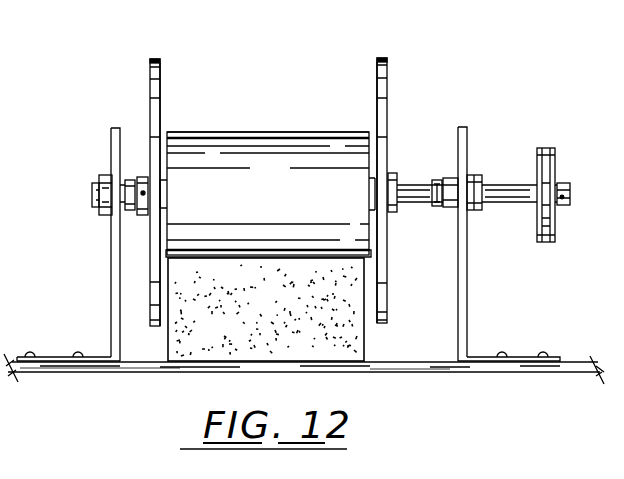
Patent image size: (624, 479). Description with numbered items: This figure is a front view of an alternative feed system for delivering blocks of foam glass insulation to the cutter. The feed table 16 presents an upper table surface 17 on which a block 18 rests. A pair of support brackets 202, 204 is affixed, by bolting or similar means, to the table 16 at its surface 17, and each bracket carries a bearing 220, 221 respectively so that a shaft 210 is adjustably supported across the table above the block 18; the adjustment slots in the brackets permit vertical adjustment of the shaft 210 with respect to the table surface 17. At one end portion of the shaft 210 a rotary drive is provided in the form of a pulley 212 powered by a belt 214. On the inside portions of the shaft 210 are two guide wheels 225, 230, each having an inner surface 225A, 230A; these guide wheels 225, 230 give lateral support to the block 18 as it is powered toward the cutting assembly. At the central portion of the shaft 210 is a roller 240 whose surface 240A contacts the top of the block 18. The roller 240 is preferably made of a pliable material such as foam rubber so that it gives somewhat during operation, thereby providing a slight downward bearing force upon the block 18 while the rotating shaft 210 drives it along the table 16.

The feed table 16 is at (445, 366).
The table surface 17 is at (386, 356).
The block 18 is at (270, 355).
The support bracket 202 is at (467, 296).
The support bracket 204 is at (59, 357).
The shaft 210 is at (412, 200).
The pulley 212 is at (557, 160).
The belt 214 is at (548, 242).
The bearing 220 is at (467, 150).
The bearing 221 is at (110, 160).
The guide wheel 225 is at (151, 55).
The inner surface 225A is at (166, 78).
The guide wheel 230 is at (378, 58).
The inner surface 230A is at (377, 76).
The roller 240 is at (276, 193).
The roller surface 240A is at (322, 124).